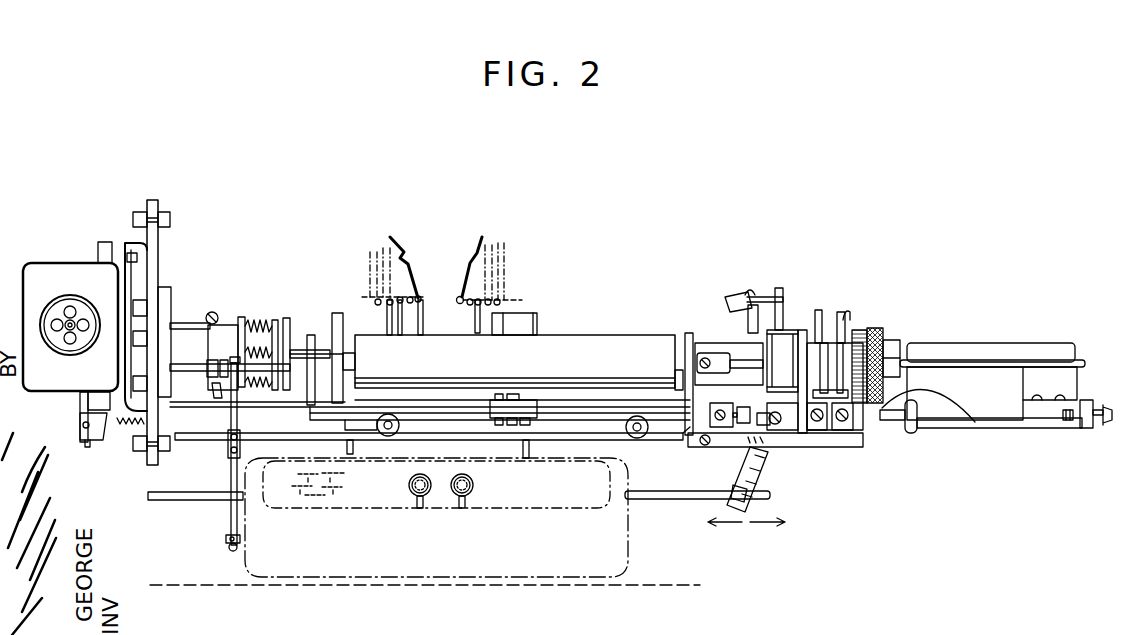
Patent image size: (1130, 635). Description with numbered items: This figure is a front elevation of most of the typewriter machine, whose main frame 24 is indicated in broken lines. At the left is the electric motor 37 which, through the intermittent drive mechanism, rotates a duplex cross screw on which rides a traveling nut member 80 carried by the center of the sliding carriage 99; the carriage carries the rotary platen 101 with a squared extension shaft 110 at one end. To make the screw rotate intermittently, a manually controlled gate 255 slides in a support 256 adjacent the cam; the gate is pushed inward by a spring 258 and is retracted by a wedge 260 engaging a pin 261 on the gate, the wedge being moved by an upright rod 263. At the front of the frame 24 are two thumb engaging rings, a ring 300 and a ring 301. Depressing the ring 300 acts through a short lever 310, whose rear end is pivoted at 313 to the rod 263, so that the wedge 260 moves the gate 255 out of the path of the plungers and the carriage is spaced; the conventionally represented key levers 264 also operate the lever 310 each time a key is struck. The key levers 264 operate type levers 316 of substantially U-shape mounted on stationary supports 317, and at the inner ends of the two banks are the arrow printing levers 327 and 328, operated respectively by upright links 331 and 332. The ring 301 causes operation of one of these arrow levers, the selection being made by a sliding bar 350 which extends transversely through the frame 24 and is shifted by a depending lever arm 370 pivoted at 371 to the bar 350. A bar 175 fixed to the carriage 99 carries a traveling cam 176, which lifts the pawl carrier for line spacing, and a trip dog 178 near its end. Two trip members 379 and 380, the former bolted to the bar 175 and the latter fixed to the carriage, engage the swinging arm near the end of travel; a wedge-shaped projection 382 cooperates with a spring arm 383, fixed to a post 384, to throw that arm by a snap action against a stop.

The main frame 24 is at (628, 553).
The electric motor 37 is at (40, 266).
The traveling nut member 80 is at (523, 320).
The sliding carriage 99 is at (332, 365).
The rotary platen 101 is at (535, 373).
The squared extension shaft 110 is at (1060, 363).
The cam carrying bar 175 is at (998, 430).
The traveling cam 176 is at (935, 415).
The trip dog 178 is at (1068, 423).
The control gate 255 is at (249, 342).
The support 256 is at (225, 345).
The spring 258 is at (208, 395).
The wedge 260 is at (236, 386).
The pin 261 is at (207, 367).
The upright rod 263 is at (230, 476).
The key levers 264 is at (312, 503).
The thumb engaging element 300 is at (413, 498).
The thumb engaging element 301 is at (468, 498).
The short lever 310 is at (227, 548).
The pivot 313 is at (228, 538).
The type levers 316 is at (372, 270).
The stationary supports 317 is at (362, 300).
The arrow printing lever 327 is at (390, 237).
The arrow printing lever 328 is at (482, 237).
The upright link 331 is at (420, 332).
The upright link 332 is at (458, 297).
The sliding bar 350 is at (168, 497).
The depending lever arm 370 is at (760, 462).
The pivot 371 is at (738, 490).
The trip member 379 is at (960, 353).
The trip member 380 is at (723, 345).
The wedge-shaped projection 382 is at (733, 292).
The spring arm 383 is at (760, 295).
The post 384 is at (782, 290).